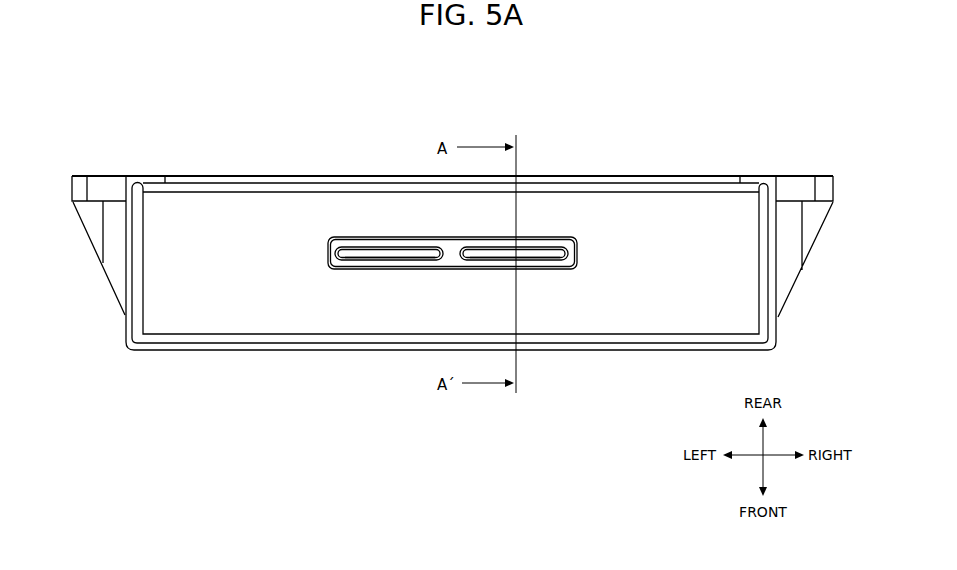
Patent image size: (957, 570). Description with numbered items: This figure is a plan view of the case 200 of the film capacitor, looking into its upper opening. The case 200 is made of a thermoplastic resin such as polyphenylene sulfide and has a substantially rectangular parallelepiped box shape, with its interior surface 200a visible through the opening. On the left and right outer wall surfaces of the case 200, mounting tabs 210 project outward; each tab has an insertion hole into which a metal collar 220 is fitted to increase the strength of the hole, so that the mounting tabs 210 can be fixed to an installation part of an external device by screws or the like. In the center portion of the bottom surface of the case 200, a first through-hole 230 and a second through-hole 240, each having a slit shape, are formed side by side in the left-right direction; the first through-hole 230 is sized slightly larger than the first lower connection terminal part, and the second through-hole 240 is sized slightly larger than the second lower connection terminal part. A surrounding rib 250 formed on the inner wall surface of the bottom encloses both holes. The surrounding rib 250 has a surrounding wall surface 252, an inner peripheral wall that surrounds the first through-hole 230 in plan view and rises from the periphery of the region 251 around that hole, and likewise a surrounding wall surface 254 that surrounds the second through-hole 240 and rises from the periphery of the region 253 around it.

The case 200 is at (257, 163).
The inner tray surface 200a is at (670, 212).
The mounting tab 210 is at (102, 187).
The metal collar 220 is at (93, 217).
The first through-hole 230 is at (533, 250).
The second through-hole 240 is at (397, 250).
The surrounding rib 250 is at (447, 238).
The region surrounding first through-hole 251 is at (527, 257).
The surrounding wall surface 252 is at (550, 250).
The region surrounding second through-hole 253 is at (383, 257).
The surrounding wall surface 254 is at (358, 253).